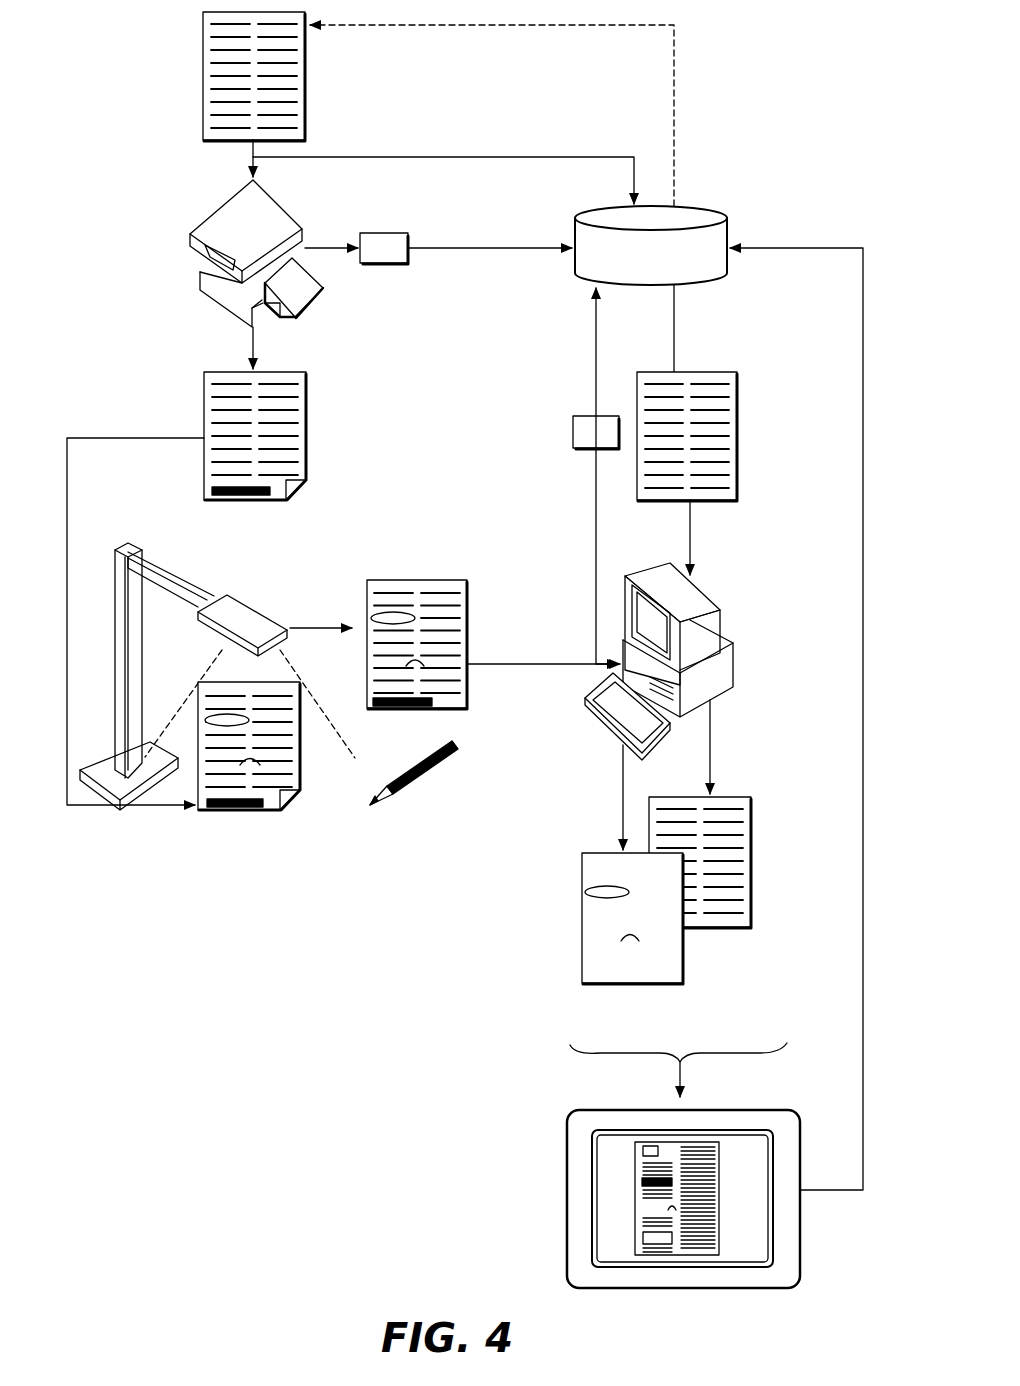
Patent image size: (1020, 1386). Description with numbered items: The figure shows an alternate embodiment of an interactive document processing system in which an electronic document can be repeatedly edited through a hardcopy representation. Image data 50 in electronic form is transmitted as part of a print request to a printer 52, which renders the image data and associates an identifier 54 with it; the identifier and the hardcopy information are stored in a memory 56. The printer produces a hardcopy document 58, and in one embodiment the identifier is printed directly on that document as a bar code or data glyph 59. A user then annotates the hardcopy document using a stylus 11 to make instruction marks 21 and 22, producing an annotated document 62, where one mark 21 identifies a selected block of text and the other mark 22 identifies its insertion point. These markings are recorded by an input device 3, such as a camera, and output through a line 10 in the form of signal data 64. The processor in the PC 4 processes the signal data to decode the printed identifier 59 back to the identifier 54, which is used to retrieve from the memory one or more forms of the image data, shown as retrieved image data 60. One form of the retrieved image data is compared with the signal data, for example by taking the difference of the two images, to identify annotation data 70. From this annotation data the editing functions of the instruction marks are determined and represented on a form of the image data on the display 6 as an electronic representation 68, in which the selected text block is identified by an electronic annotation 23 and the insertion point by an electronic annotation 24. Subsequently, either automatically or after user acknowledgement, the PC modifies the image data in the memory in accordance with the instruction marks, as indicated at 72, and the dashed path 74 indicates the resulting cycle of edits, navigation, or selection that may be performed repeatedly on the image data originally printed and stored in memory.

The image data 50 is at (306, 60).
The printer 52 is at (292, 215).
The identifier (ID) 54 is at (395, 233).
The memory 56 is at (718, 210).
The hardcopy document 58 is at (298, 372).
The printed identifier (bar code or data glyph) 59 is at (260, 496).
The retrieved image data 60 is at (722, 372).
The annotated document 62 is at (300, 772).
The signal data 64 is at (440, 580).
The input device 3 is at (267, 612).
The instruction mark 21 is at (222, 714).
The instruction mark 22 is at (250, 762).
The line 10 is at (493, 664).
The stylus 11 is at (437, 763).
The PC 4 is at (712, 583).
The annotation data 70 is at (597, 852).
The modification of image data in memory 72 is at (863, 492).
The cycle of edits 74 is at (677, 116).
The display 6 is at (780, 1110).
The electronic representation 68 is at (720, 1178).
The electronic annotation 23 is at (645, 1182).
The electronic annotation 24 is at (672, 1207).